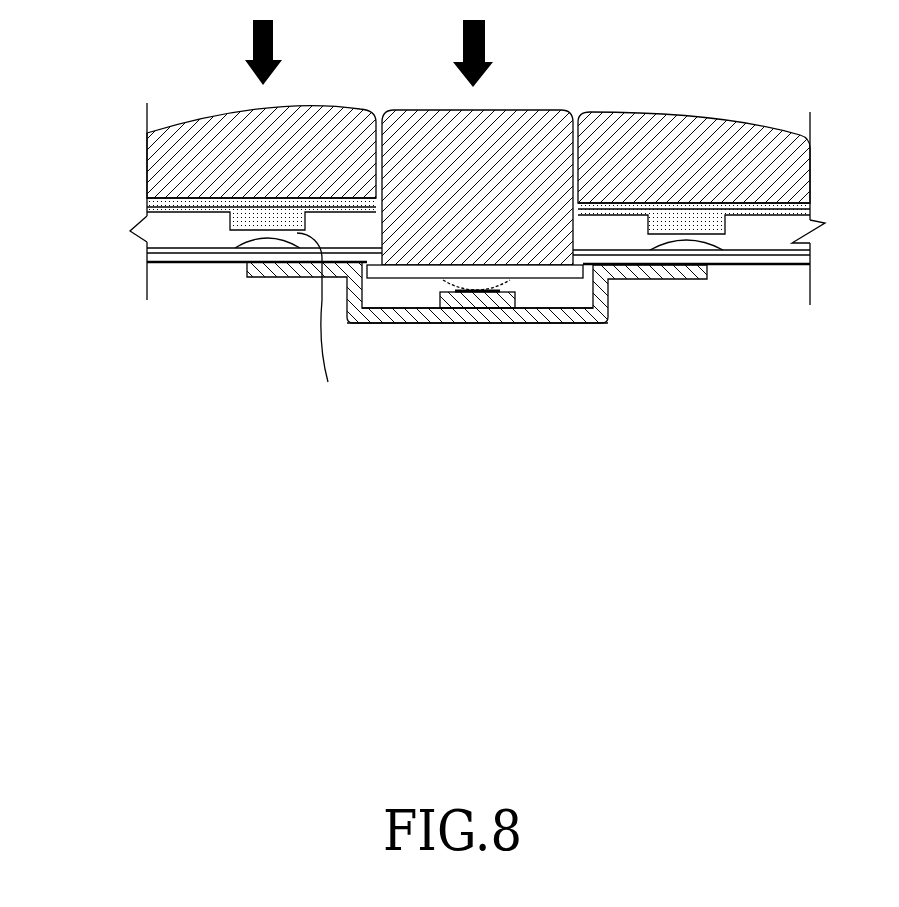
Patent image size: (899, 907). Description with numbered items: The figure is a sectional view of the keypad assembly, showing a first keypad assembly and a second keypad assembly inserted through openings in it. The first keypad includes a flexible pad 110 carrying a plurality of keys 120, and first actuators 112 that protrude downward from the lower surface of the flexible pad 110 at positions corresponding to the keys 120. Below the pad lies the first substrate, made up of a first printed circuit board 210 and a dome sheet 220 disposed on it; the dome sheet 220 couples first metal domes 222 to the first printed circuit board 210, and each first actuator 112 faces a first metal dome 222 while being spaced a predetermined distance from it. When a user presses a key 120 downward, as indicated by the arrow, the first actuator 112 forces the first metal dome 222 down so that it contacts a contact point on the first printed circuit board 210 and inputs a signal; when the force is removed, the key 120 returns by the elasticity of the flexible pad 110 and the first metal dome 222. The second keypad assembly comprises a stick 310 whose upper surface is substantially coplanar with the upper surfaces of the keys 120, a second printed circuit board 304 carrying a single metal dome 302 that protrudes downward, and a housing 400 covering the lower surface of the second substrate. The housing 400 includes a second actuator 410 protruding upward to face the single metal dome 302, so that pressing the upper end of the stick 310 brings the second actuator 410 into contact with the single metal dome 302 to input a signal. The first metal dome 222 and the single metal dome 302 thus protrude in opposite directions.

The key 120 is at (340, 112).
The stick 310 is at (538, 123).
The flexible pad 110 is at (147, 203).
The first actuator 112 is at (230, 223).
The dome sheet 220 is at (147, 233).
The first metal dome 222 is at (322, 322).
The first printed circuit board 210 is at (147, 257).
The housing 400 is at (610, 312).
The second actuator 410 is at (557, 328).
The second printed circuit board 304 is at (410, 272).
The single metal dome 302 is at (473, 292).